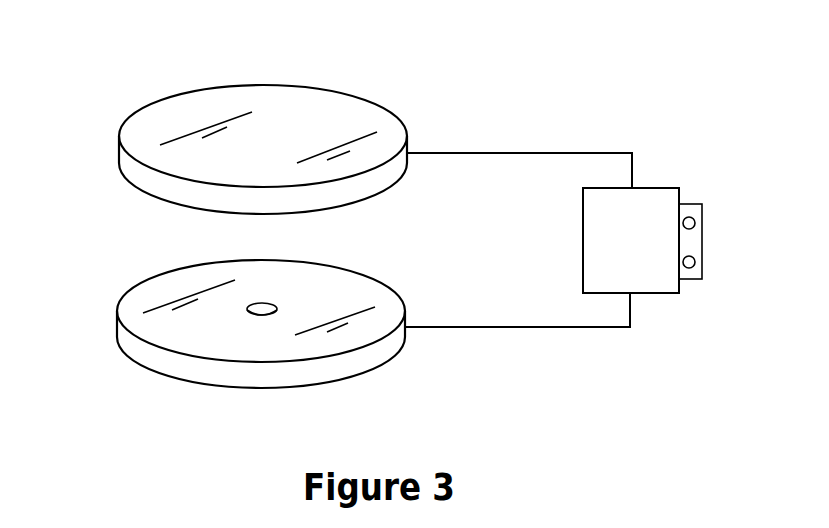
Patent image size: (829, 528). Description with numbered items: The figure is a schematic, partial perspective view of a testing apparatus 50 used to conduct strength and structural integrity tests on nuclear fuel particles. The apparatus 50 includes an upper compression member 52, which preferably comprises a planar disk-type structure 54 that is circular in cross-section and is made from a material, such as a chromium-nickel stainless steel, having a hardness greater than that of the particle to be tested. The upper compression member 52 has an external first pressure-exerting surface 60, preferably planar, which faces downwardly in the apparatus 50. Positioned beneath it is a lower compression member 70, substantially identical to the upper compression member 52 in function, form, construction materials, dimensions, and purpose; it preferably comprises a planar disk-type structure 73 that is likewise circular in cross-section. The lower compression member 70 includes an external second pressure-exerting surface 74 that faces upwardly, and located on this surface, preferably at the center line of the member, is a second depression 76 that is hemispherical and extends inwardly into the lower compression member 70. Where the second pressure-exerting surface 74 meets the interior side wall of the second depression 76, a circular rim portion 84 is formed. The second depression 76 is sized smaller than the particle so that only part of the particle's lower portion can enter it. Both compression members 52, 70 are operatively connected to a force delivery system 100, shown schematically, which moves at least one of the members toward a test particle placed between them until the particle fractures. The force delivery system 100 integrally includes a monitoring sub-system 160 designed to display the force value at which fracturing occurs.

The testing apparatus 50 is at (562, 96).
The upper compression member 52 is at (229, 110).
The planar disk-type structure 54 is at (225, 98).
The first pressure-exerting surface 60 is at (138, 192).
The lower compression member 70 is at (263, 330).
The planar disk-type structure 73 is at (170, 284).
The second pressure-exerting surface 74 is at (210, 333).
The second depression 76 is at (343, 375).
The circular rim portion 84 is at (277, 313).
The force delivery system 100 is at (648, 273).
The monitoring sub-system 160 is at (691, 202).